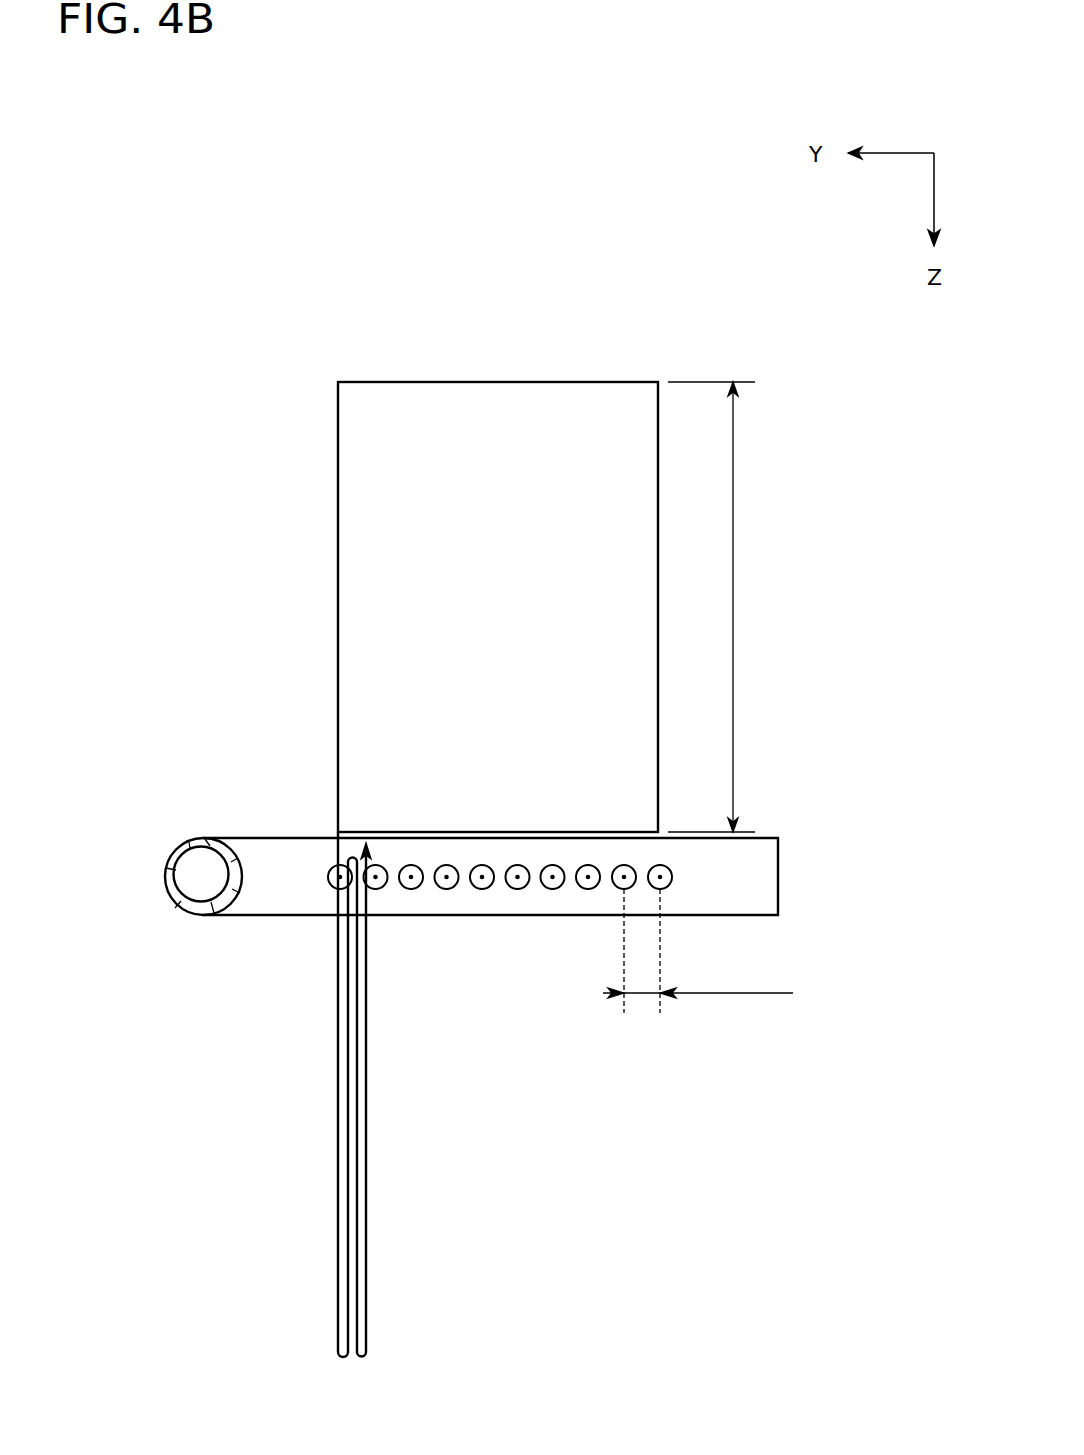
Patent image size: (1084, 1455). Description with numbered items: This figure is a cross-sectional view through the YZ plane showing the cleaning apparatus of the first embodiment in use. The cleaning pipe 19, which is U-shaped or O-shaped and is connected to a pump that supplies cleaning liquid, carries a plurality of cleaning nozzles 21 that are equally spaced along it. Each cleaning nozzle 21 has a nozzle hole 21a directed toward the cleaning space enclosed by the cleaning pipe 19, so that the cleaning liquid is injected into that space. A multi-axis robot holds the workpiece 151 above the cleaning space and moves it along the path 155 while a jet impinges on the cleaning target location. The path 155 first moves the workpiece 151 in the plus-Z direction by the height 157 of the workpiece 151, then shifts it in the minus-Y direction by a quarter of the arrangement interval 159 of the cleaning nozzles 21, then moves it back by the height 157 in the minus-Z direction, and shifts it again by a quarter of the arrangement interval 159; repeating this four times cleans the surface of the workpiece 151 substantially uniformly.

The workpiece 151 is at (338, 622).
The height 157 is at (742, 607).
The cleaning pipe 19 is at (241, 838).
The cleaning nozzle 21 is at (518, 889).
The nozzle hole 21a is at (516, 865).
The arrangement interval 159 is at (698, 951).
The path 155 is at (368, 1050).